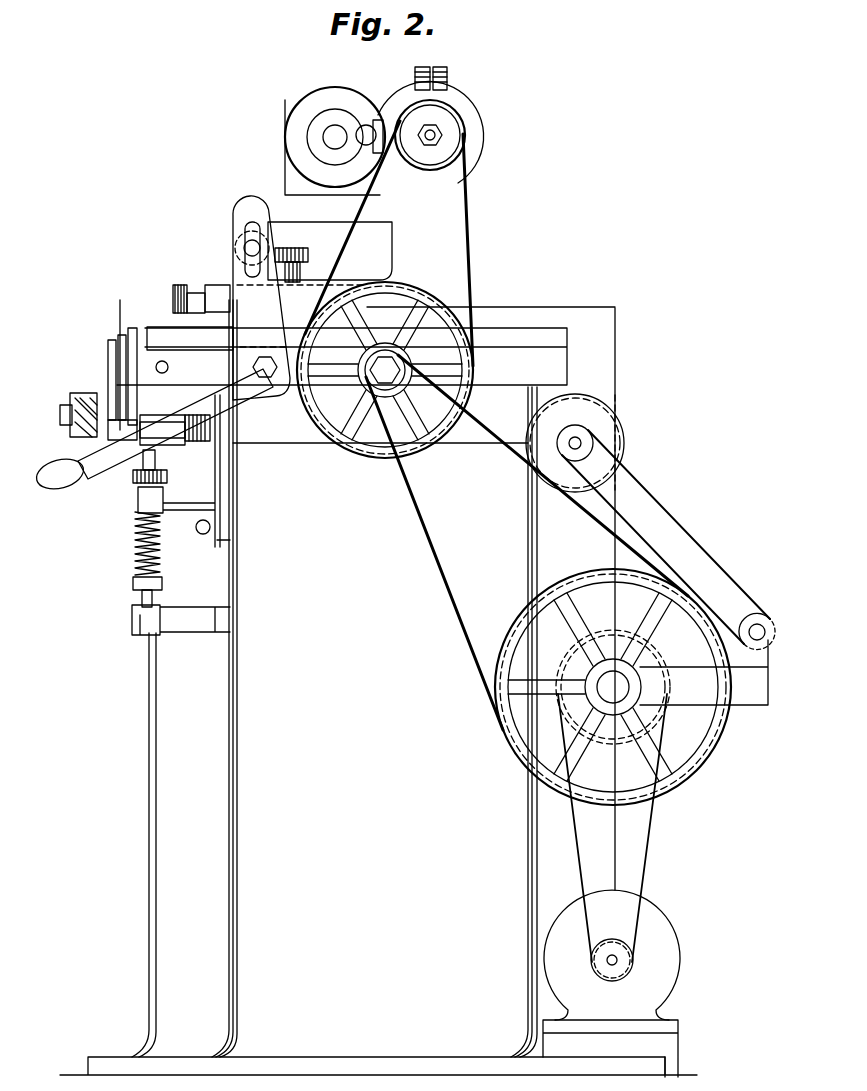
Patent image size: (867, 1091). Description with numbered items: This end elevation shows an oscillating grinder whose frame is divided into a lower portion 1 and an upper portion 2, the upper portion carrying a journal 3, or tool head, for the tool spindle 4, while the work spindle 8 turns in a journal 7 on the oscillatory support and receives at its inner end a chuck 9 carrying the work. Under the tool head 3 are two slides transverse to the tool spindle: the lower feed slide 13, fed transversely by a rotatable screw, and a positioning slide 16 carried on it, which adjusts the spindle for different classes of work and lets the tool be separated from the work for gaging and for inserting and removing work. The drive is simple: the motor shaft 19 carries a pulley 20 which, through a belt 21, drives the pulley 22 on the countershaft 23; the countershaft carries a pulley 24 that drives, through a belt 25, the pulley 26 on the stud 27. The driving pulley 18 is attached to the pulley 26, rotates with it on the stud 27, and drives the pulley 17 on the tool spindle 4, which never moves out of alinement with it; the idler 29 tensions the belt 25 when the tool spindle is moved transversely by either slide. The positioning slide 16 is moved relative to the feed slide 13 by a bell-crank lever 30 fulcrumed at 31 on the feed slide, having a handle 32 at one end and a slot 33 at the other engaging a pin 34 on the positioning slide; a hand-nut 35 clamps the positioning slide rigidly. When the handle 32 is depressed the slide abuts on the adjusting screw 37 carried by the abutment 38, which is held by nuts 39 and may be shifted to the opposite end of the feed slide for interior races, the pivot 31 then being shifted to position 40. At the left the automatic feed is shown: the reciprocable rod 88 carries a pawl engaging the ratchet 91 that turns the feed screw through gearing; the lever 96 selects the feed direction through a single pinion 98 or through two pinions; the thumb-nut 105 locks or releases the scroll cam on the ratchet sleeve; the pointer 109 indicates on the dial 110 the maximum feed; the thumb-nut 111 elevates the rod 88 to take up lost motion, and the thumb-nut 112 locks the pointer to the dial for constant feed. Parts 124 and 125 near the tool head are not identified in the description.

The lower portion 1 is at (150, 745).
The upper portion 2 is at (498, 392).
The journal 3 is at (458, 100).
The tool spindle 4 is at (442, 136).
The journal 7 is at (308, 102).
The work spindle 8 is at (323, 135).
The chuck 9 is at (338, 110).
The feed slide 13 is at (120, 342).
The positioning slide 16 is at (215, 425).
The pulley 17 is at (455, 120).
The driving pulley 18 is at (422, 297).
The motor shaft 19 is at (618, 962).
The pulley 20 is at (600, 955).
The belt 21 is at (648, 876).
The pulley 22 is at (655, 660).
The countershaft 23 is at (630, 690).
The pulley 24 is at (705, 755).
The belt 25 is at (582, 512).
The pulley 26 is at (385, 343).
The stud 27 is at (400, 370).
The idler 29 is at (615, 420).
The bell-crank lever 30 is at (240, 275).
The fulcrum 31 is at (265, 380).
The handle 32 is at (56, 462).
The slot 33 is at (252, 222).
The pin 34 is at (243, 248).
The hand-nut 35 is at (305, 250).
The adjusting screw 37 is at (178, 290).
The abutment 38 is at (150, 327).
The nuts 39 is at (210, 292).
The position 40 is at (156, 367).
The reciprocable rod 88 is at (135, 533).
The ratchet 91 is at (158, 398).
The lever 96 is at (218, 480).
The pinion 98 is at (205, 435).
The thumb-nut 105 is at (75, 400).
The pointer 109 is at (112, 345).
The dial 110 is at (125, 472).
The thumb-nut 111 is at (167, 478).
The thumb-nut 112 is at (128, 330).
The roller 124 is at (366, 110).
The bolt 125 is at (420, 68).